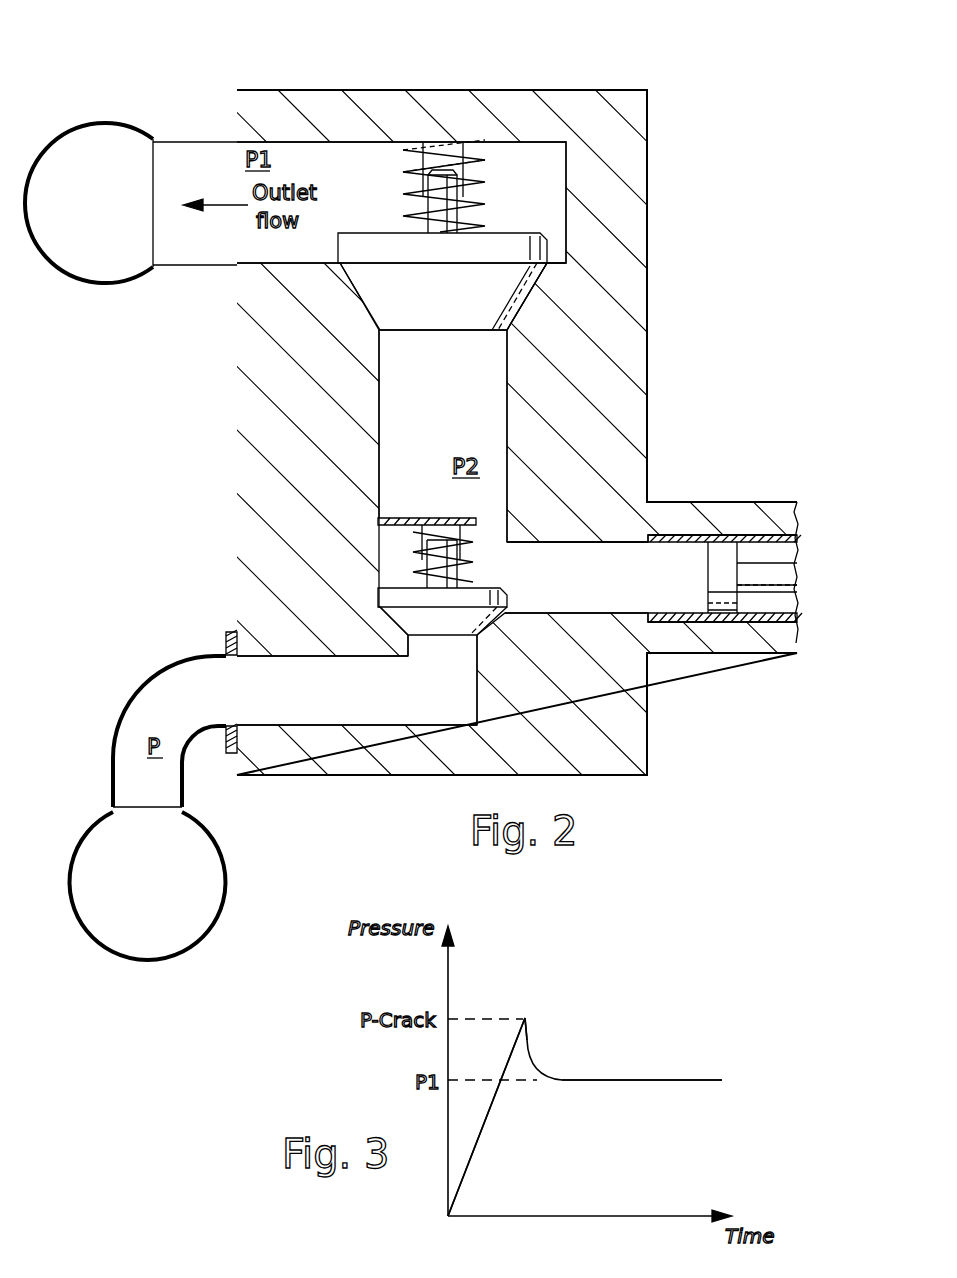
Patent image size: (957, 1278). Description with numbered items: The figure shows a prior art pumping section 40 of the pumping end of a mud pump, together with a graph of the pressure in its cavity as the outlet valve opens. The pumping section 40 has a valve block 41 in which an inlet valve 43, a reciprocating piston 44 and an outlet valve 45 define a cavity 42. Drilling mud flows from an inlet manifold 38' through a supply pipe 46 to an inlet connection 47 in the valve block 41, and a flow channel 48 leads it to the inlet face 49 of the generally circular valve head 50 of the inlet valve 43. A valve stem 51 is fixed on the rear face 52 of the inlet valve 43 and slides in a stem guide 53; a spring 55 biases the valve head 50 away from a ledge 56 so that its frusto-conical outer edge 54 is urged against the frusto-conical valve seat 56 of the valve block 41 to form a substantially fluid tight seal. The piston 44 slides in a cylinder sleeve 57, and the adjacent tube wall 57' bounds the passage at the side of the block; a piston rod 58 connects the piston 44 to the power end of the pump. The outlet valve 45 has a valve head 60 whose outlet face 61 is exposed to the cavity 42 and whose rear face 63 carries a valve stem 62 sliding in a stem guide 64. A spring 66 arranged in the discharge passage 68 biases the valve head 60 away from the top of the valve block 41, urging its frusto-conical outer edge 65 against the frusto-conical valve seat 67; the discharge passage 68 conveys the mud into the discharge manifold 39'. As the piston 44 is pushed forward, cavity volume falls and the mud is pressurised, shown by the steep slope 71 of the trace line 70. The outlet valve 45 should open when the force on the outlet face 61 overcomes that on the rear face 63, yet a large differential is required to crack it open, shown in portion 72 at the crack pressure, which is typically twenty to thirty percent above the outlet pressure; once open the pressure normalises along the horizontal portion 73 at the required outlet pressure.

In FIG. 2, the inlet manifold 38' is at (149, 909).
In FIG. 2, the discharge manifold 39' is at (131, 177).
In FIG. 2, the pumping section 40 is at (497, 85).
In FIG. 2, the valve block 41 is at (647, 392).
In FIG. 2, the cavity 42 is at (445, 428).
In FIG. 2, the inlet valve 43 is at (526, 585).
In FIG. 2, the reciprocating piston 44 is at (725, 555).
In FIG. 2, the outlet valve 45 is at (548, 247).
In FIG. 2, the supply pipe 46 is at (152, 685).
In FIG. 2, the inlet connection 47 is at (223, 640).
In FIG. 2, the flow channel 48 is at (330, 701).
In FIG. 2, the inlet face 49 is at (437, 640).
In FIG. 2, the valve head 50 is at (500, 600).
In FIG. 2, the valve stem 51 is at (420, 573).
In FIG. 2, the rear face 52 is at (420, 583).
In FIG. 2, the stem guide 53 is at (508, 540).
In FIG. 2, the frusto-conical outer edge 54 is at (390, 622).
In FIG. 2, the spring 55 is at (465, 570).
In FIG. 2, the ledge / frusto-conical valve seat 56 is at (392, 518).
In FIG. 2, the cylinder sleeve 57 is at (719, 625).
In FIG. 2, the tube wall 57' is at (725, 529).
In FIG. 2, the piston rod 58 is at (767, 580).
In FIG. 2, the valve head 60 is at (338, 250).
In FIG. 2, the outlet face 61 is at (430, 333).
In FIG. 2, the valve stem 62 is at (423, 206).
In FIG. 2, the rear face 63 is at (497, 232).
In FIG. 2, the stem guide 64 is at (483, 152).
In FIG. 2, the frusto-conical outer edge 65 is at (358, 295).
In FIG. 2, the spring 66 is at (482, 178).
In FIG. 2, the frusto-conical valve seat 67 is at (515, 312).
In FIG. 2, the discharge passage 68 is at (362, 181).
In FIG. 3, the trace line 70 is at (530, 1045).
In FIG. 3, the steep slope 71 is at (470, 1157).
In FIG. 3, the portion 72 is at (518, 1056).
In FIG. 3, the horizontal portion 73 is at (650, 1078).